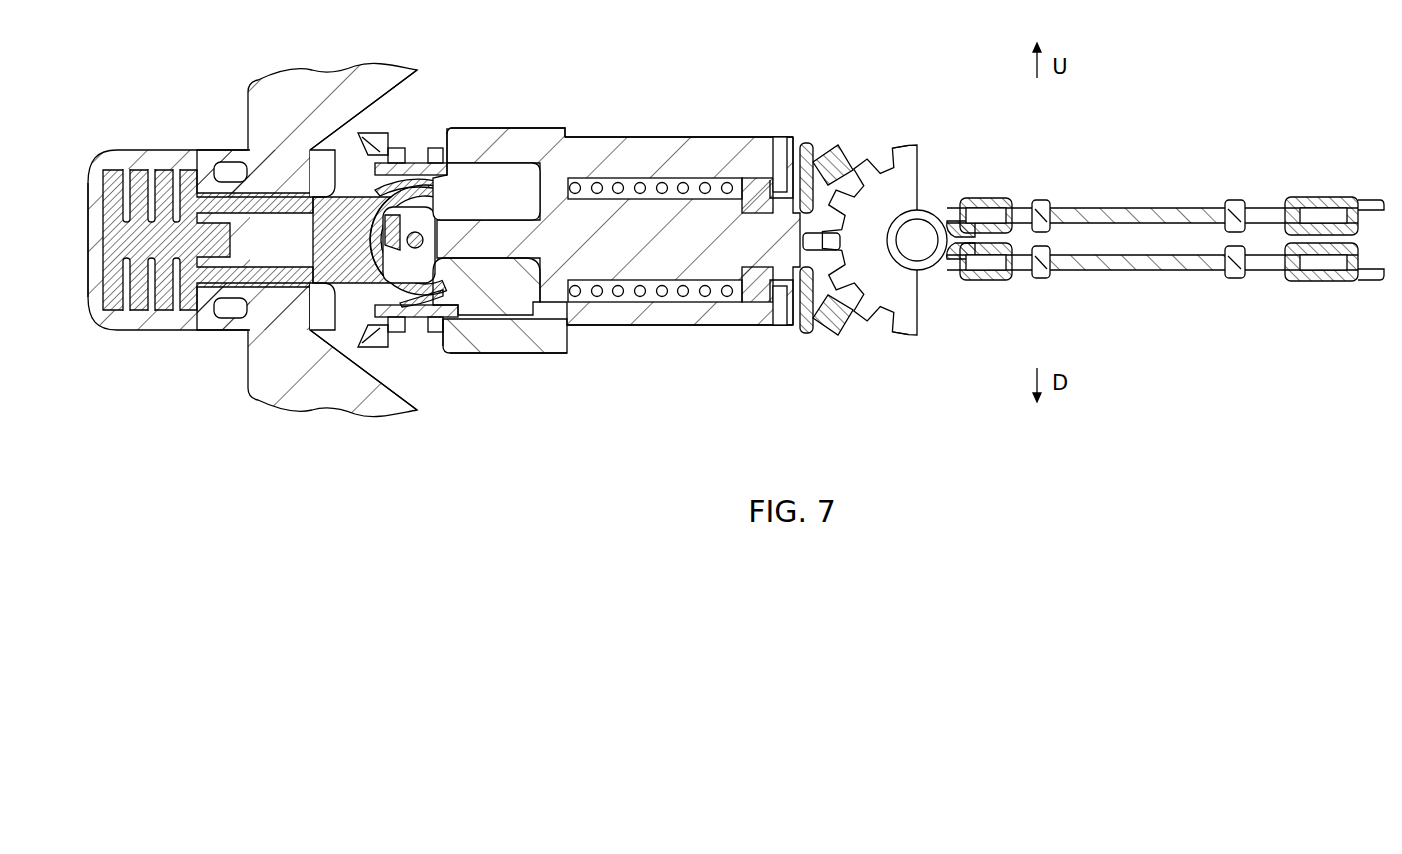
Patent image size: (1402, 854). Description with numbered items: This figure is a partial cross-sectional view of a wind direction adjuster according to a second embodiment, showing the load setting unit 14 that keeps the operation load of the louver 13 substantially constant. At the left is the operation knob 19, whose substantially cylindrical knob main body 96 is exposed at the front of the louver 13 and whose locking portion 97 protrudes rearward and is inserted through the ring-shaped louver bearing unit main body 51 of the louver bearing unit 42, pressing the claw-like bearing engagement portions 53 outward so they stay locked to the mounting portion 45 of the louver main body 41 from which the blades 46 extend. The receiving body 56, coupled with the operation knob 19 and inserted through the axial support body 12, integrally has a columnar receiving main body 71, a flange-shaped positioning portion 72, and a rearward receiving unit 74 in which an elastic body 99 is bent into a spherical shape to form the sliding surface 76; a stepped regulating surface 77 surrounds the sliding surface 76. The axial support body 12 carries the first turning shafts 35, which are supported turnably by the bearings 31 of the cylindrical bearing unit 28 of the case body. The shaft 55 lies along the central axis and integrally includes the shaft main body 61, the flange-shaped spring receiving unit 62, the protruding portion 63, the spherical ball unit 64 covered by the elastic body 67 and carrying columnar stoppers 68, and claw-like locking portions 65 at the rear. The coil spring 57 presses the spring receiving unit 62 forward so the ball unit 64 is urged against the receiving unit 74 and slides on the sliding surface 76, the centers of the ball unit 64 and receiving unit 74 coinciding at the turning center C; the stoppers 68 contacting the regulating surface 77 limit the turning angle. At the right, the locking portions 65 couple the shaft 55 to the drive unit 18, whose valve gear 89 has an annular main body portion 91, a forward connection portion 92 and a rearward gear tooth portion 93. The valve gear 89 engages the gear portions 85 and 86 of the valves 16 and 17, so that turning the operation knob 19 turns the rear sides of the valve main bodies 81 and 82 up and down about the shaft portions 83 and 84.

The axial support body 12 is at (451, 158).
The louver 13 is at (292, 234).
The louver main body 41 is at (307, 200).
The load setting unit 14 is at (579, 235).
The valve 16 is at (1165, 202).
The valve 17 is at (1165, 276).
The drive unit 18 is at (912, 217).
The operation knob 19 is at (200, 240).
The bearing unit 28 is at (637, 143).
The bearing 31 is at (452, 132).
The first turning shaft 35 is at (392, 142).
The louver bearing unit 42 is at (300, 270).
The mounting portion 45 is at (232, 318).
The blade 46 is at (268, 87).
The louver bearing unit main body 51 is at (338, 332).
The bearing engagement portion 53 is at (223, 172).
The shaft 55 is at (580, 186).
The receiving body 56 is at (460, 340).
The coil spring 57 is at (683, 294).
The shaft main body 61 is at (622, 278).
The spring receiving unit 62 is at (555, 187).
The protruding portion 63 is at (496, 228).
The ball unit 64 is at (518, 308).
The locking portion 65 is at (731, 256).
The elastic body 67 is at (345, 262).
The stopper 68 is at (421, 168).
The receiving main body 71 is at (342, 217).
The positioning portion 72 is at (333, 190).
The receiving unit 74 is at (415, 240).
The sliding surface 76 is at (381, 279).
The regulating surface 77 is at (392, 200).
The valve main body 81 is at (1188, 207).
The valve main body 82 is at (1188, 271).
The shaft portion 83 is at (945, 212).
The shaft portion 84 is at (924, 212).
The gear portion 85 is at (905, 158).
The gear portion 86 is at (906, 313).
The valve gear 89 is at (835, 322).
The main body portion 91 is at (807, 142).
The connection portion 92 is at (758, 186).
The gear tooth portion 93 is at (830, 145).
The knob main body 96 is at (100, 325).
The locking portion 97 is at (184, 172).
The elastic body 99 is at (375, 308).
The turning center C is at (422, 233).